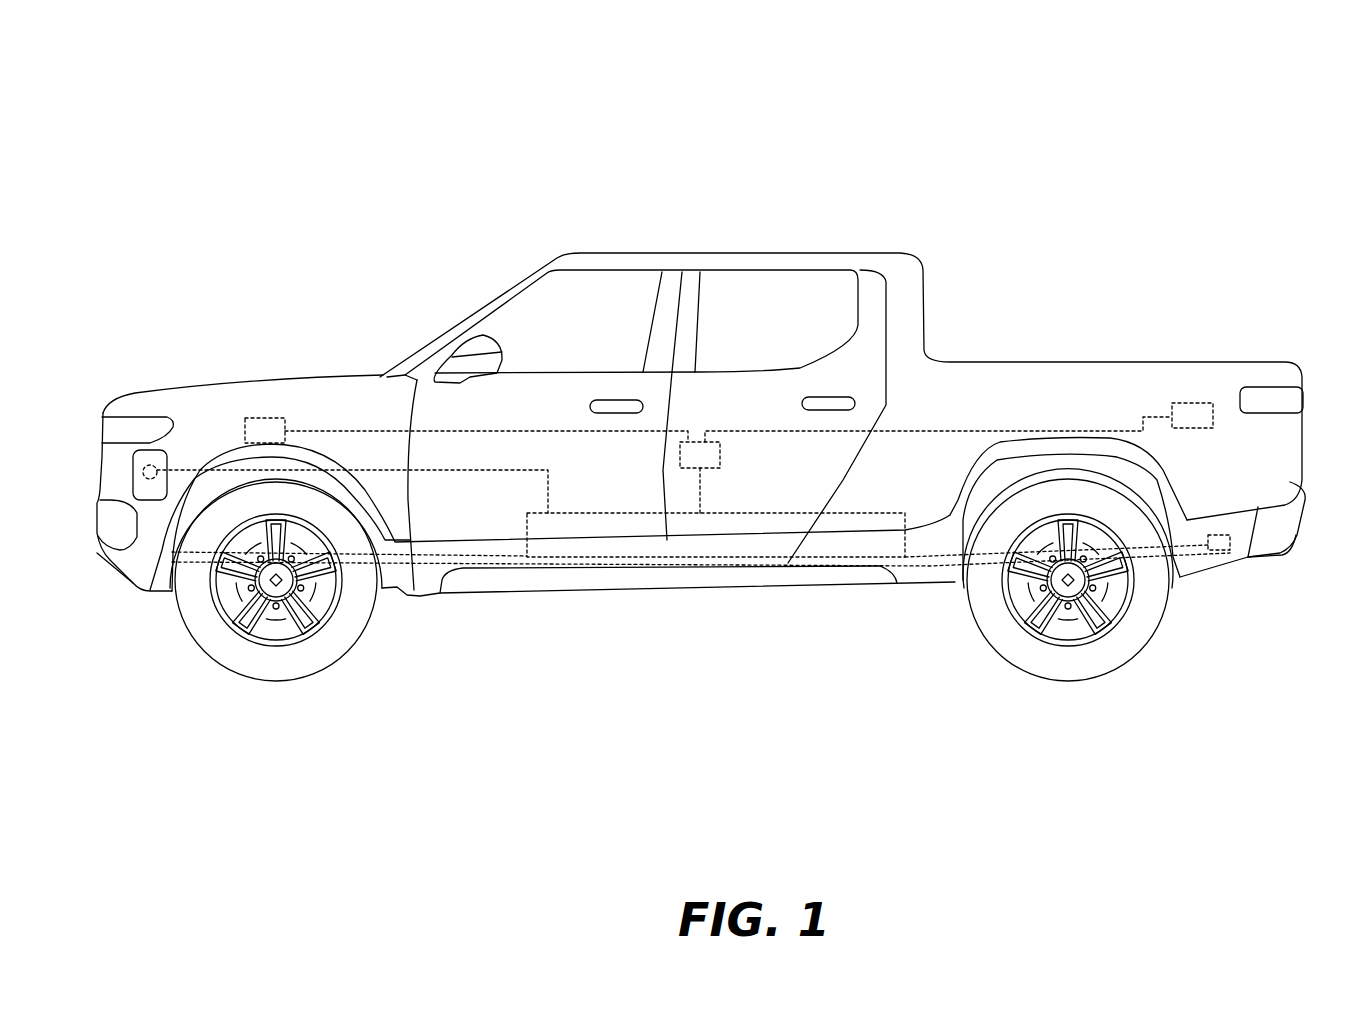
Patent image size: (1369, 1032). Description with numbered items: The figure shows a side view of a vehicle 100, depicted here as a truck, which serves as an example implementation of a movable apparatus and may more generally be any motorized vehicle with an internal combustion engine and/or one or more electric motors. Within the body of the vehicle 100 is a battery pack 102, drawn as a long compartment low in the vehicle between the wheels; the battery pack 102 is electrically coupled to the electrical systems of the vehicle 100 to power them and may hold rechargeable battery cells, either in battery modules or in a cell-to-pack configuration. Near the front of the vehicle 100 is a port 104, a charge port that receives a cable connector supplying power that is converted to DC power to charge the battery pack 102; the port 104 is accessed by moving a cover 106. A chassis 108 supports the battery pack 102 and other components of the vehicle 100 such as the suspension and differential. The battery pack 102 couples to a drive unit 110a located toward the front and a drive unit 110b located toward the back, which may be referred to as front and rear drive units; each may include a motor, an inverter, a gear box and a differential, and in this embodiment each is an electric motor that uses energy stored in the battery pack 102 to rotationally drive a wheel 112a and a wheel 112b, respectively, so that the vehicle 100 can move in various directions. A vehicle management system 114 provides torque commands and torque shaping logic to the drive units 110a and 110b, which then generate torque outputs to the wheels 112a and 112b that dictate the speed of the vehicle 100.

The vehicle 100 is at (254, 140).
The battery pack 102 is at (527, 537).
The port 104 is at (150, 465).
The cover 106 is at (123, 483).
The chassis 108 is at (927, 567).
The drive unit 110a is at (272, 418).
The drive unit 110b is at (1185, 403).
The wheel 112a is at (173, 610).
The wheel 112b is at (1170, 603).
The vehicle management system 114 is at (710, 468).